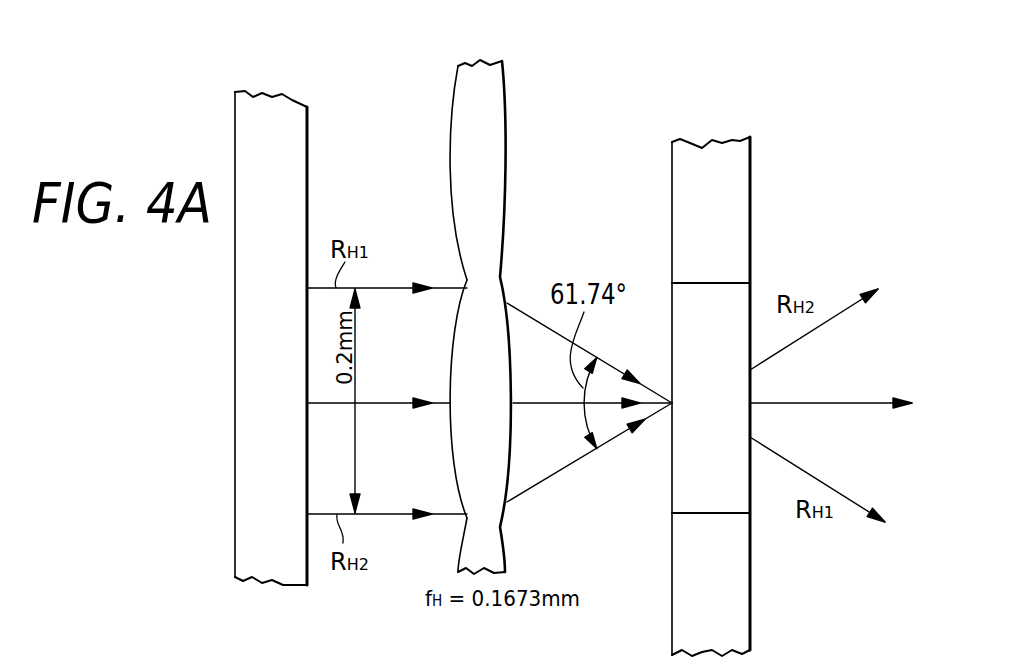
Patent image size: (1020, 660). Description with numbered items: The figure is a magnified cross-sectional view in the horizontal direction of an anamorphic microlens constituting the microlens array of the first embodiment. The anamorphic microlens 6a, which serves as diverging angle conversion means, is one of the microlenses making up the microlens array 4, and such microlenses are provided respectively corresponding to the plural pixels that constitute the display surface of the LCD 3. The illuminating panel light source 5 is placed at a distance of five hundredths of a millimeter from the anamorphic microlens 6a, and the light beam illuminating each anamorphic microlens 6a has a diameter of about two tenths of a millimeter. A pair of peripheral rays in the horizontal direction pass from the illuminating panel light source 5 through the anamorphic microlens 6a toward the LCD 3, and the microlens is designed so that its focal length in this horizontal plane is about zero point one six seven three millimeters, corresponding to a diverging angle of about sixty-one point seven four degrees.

The LCD 3 is at (703, 163).
The microlens array 4 is at (461, 292).
The illuminating panel light source 5 is at (272, 118).
The anamorphic microlens 6a is at (483, 345).